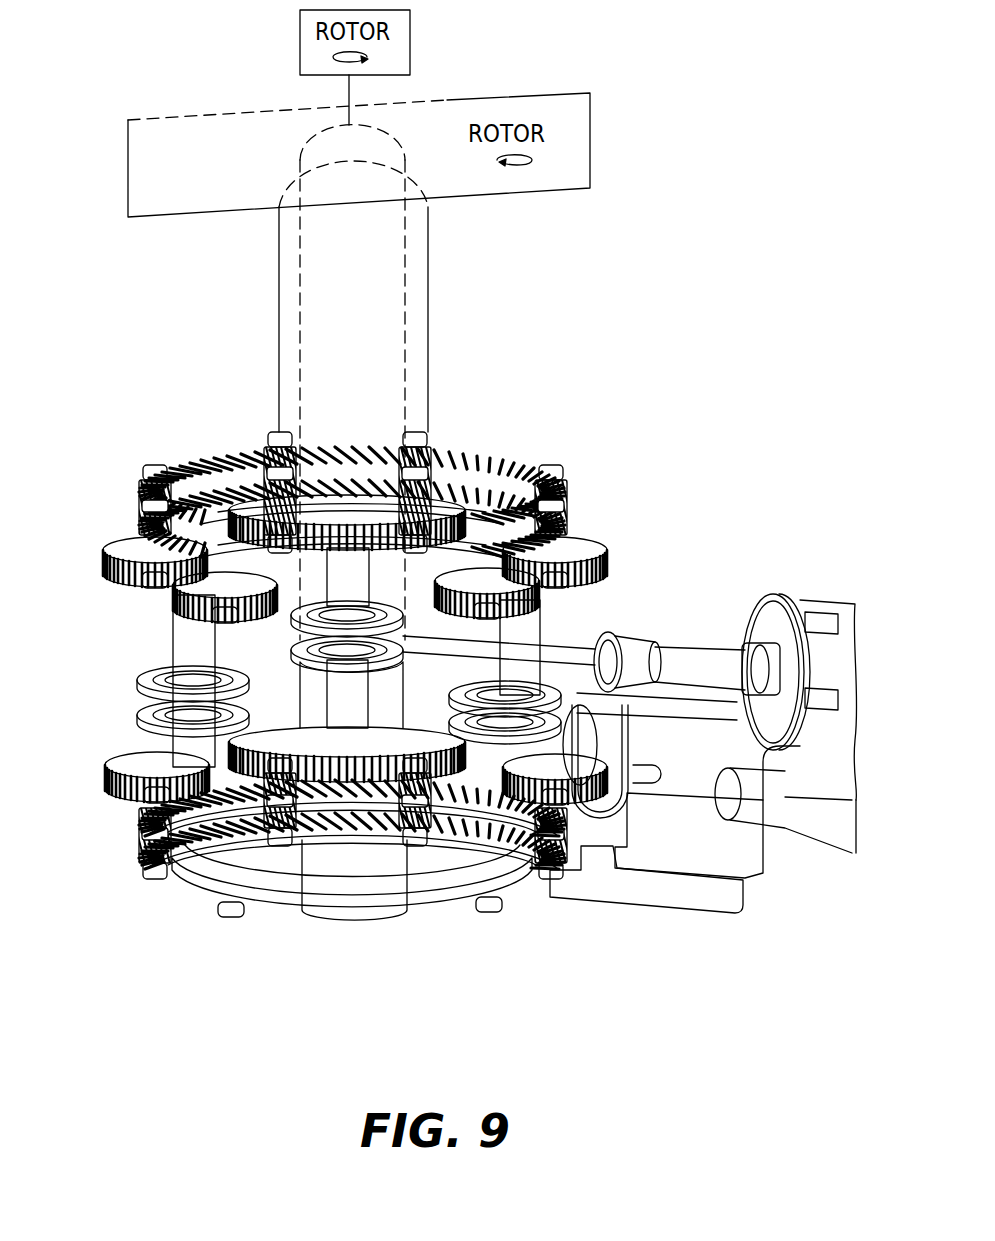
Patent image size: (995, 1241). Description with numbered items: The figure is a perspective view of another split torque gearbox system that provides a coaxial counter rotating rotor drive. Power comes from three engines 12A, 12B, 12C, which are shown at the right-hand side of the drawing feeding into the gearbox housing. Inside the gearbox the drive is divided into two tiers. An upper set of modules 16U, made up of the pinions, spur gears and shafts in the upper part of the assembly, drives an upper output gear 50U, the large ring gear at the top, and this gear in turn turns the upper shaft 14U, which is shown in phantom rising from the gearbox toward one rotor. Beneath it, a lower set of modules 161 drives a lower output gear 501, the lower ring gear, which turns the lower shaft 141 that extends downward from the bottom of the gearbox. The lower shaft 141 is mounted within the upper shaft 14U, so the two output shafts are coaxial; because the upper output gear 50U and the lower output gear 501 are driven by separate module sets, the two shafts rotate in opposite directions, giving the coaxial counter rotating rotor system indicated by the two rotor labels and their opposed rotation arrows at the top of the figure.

The upper shaft 14U is at (415, 330).
The upper output gear 50U is at (487, 462).
The upper set of modules 16U is at (605, 529).
The lower set of modules 161 is at (104, 855).
The lower output gear 501 is at (185, 870).
The lower shaft 141 is at (382, 888).
The engine 12A is at (803, 600).
The engine 12B is at (678, 783).
The engine 12C is at (620, 883).